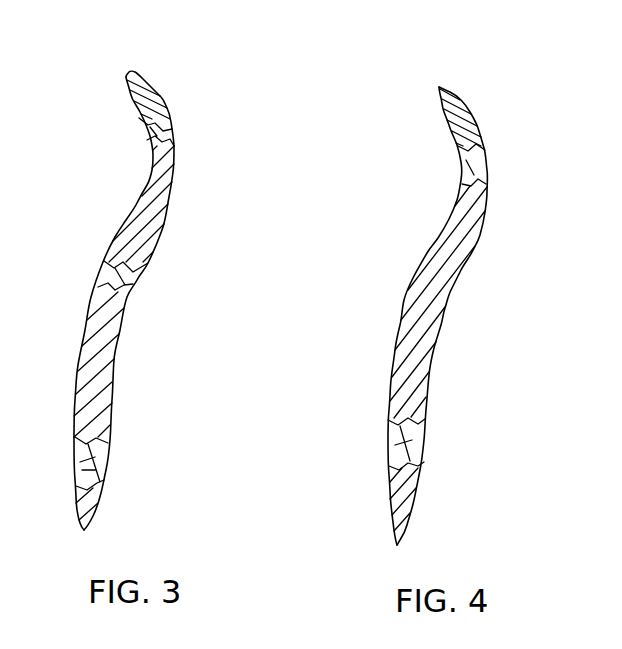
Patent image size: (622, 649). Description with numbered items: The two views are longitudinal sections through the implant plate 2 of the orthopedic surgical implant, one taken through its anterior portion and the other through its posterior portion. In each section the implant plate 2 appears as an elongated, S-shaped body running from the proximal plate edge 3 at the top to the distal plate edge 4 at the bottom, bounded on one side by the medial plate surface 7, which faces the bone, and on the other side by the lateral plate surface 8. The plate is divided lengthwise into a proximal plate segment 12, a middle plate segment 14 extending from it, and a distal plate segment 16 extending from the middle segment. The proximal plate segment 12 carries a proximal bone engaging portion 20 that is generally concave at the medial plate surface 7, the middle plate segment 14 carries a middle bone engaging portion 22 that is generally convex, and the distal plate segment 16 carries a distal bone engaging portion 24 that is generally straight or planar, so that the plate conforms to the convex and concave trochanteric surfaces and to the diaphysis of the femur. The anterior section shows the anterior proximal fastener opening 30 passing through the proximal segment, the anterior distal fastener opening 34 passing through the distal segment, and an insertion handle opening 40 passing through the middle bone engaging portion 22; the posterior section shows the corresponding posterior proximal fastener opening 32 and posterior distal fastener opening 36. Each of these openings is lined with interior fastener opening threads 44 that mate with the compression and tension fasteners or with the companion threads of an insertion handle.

In FIG. 3, the implant plate 2 is at (158, 73).
In FIG. 4, the implant plate 2 is at (471, 81).
In FIG. 3, the proximal plate edge 3 is at (153, 95).
In FIG. 4, the proximal plate edge 3 is at (436, 85).
In FIG. 3, the distal plate edge 4 is at (83, 532).
In FIG. 4, the distal plate edge 4 is at (396, 546).
In FIG. 3, the medial plate surface 7 is at (122, 210).
In FIG. 4, the medial plate surface 7 is at (400, 257).
In FIG. 3, the lateral plate surface 8 is at (180, 237).
In FIG. 4, the lateral plate surface 8 is at (500, 267).
In FIG. 3, the proximal plate segment 12 is at (270, 211).
In FIG. 3, the middle plate segment 14 is at (255, 363).
In FIG. 3, the distal plate segment 16 is at (217, 542).
In FIG. 3, the proximal bone engaging portion 20 is at (146, 172).
In FIG. 4, the proximal bone engaging portion 20 is at (455, 206).
In FIG. 3, the middle bone engaging portion 22 is at (102, 288).
In FIG. 4, the middle bone engaging portion 22 is at (405, 318).
In FIG. 3, the distal bone engaging portion 24 is at (75, 440).
In FIG. 4, the distal bone engaging portion 24 is at (385, 477).
In FIG. 3, the anterior proximal fastener opening 30 is at (134, 125).
In FIG. 4, the posterior proximal fastener opening 32 is at (447, 163).
In FIG. 3, the anterior distal fastener opening 34 is at (62, 469).
In FIG. 4, the posterior distal fastener opening 36 is at (375, 437).
In FIG. 3, the insertion handle opening 40 is at (92, 273).
In FIG. 3, the interior fastener opening threads 44 is at (171, 138).
In FIG. 4, the interior fastener opening threads 44 is at (486, 185).